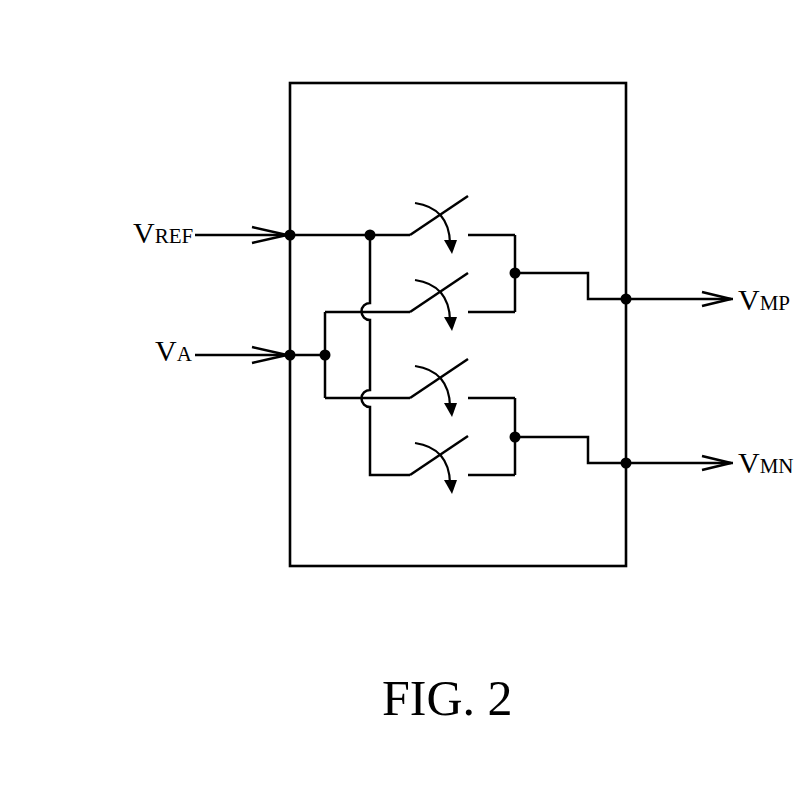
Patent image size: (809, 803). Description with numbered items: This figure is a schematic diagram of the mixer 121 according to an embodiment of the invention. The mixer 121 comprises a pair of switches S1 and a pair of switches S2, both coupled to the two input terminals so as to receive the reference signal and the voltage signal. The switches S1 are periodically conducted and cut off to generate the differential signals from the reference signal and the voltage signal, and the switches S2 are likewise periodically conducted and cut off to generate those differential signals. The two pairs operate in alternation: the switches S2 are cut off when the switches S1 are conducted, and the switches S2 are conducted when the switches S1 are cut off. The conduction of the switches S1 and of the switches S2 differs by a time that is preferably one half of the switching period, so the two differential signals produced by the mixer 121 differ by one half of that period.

The mixer 121 is at (607, 83).
The switches S1 is at (462, 383).
The switches S2 is at (462, 306).